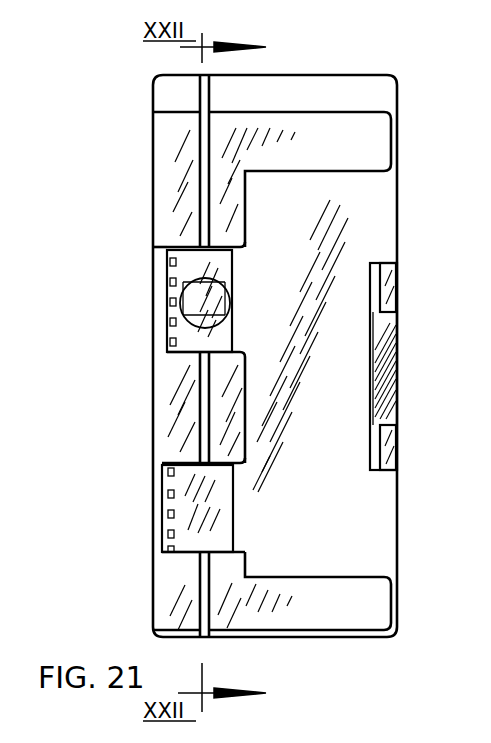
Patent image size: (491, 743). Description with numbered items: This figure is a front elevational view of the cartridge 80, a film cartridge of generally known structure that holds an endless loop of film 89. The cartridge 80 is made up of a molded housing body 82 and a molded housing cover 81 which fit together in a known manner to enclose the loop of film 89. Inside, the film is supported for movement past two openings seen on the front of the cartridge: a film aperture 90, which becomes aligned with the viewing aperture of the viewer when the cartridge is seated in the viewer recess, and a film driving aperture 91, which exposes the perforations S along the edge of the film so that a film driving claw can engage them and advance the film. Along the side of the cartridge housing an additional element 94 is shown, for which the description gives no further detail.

The cartridge 80 is at (378, 199).
The housing cover 81 is at (165, 86).
The housing body 82 is at (311, 90).
The loop of film 89 is at (220, 260).
The film aperture 90 is at (186, 270).
The film driving aperture 91 is at (182, 498).
The perforations S is at (167, 471).
The side member 94 is at (398, 360).